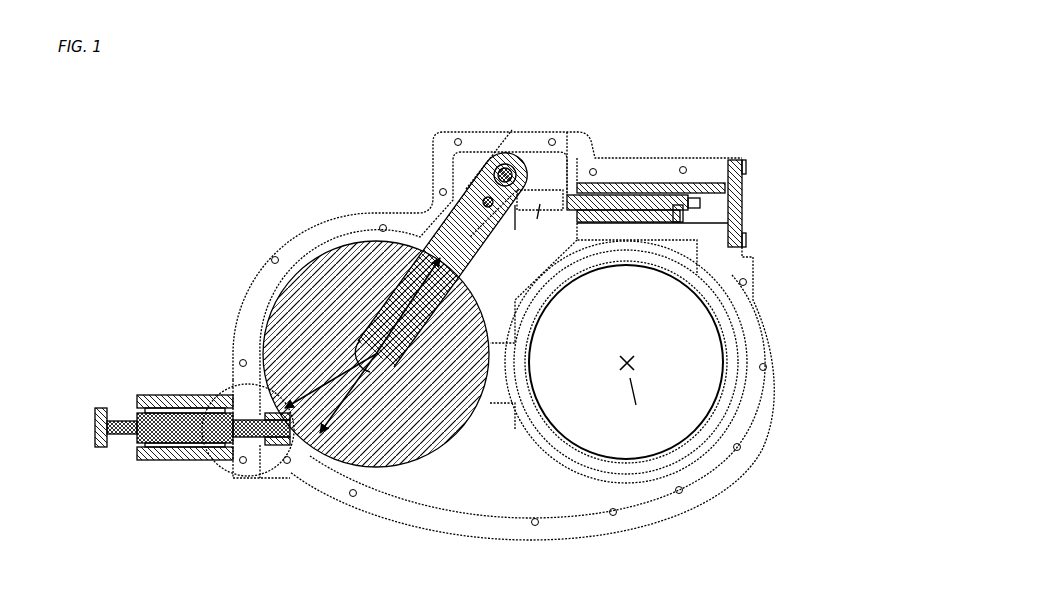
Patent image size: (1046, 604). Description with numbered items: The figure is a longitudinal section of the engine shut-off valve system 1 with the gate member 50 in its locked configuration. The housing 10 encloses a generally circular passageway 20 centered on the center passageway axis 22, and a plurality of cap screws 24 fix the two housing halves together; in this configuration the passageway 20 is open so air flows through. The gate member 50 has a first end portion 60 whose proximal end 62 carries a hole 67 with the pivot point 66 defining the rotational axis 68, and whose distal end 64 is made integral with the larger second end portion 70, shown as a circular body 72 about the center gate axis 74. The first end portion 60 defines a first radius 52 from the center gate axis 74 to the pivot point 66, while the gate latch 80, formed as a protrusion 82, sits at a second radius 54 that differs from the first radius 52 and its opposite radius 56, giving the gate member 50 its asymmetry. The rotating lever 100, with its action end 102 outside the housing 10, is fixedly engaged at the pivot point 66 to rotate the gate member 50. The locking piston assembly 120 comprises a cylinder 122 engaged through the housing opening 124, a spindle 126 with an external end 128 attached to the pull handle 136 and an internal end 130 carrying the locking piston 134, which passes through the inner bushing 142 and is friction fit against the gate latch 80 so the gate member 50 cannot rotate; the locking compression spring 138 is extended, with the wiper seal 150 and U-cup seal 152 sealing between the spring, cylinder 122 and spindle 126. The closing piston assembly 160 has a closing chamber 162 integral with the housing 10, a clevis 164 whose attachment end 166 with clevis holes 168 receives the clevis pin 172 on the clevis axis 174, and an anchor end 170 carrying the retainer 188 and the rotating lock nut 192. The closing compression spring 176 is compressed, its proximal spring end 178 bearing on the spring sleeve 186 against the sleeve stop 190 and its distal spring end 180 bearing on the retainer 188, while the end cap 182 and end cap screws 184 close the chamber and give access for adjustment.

The engine shut-off valve system 1 is at (197, 157).
The housing 10 is at (288, 235).
The passageway 20 is at (705, 388).
The center passageway axis 22 is at (626, 362).
The cap screws 24 is at (680, 490).
The gate member 50 is at (388, 450).
The first radius 52 is at (458, 380).
The second radius 54 is at (300, 462).
The opposite radius 56 is at (376, 356).
The first end portion 60 is at (465, 247).
The proximal end 62 is at (508, 172).
The distal end 64 is at (455, 262).
The pivot point 66 is at (510, 172).
The hole 67 is at (500, 172).
The rotational axis 68 is at (500, 172).
The second end portion 70 is at (452, 425).
The circular body 72 is at (430, 437).
The center gate axis 74 is at (376, 354).
The gate latch 80 is at (283, 406).
The protrusion 82 is at (290, 450).
The rotating lever 100 is at (505, 173).
The action end 102 is at (506, 170).
The locking piston assembly 120 is at (157, 397).
The cylinder 122 is at (207, 460).
The housing opening 124 is at (274, 447).
The spindle 126 is at (157, 440).
The external end 128 is at (138, 430).
The internal end 130 is at (233, 408).
The locking piston 134 is at (242, 413).
The pull handle 136 is at (100, 447).
The locking compression spring 138 is at (140, 415).
The inner bushing 142 is at (242, 447).
The wiper seal 150 is at (140, 418).
The U-cup seal 152 is at (187, 450).
The closing piston assembly 160 is at (660, 190).
The closing chamber 162 is at (720, 167).
The clevis 164 is at (533, 225).
The attachment end 166 is at (518, 238).
The clevis holes 168 is at (484, 200).
The anchor end 170 is at (645, 198).
The clevis pin 172 is at (486, 183).
The clevis axis 174 is at (483, 200).
The closing compression spring 176 is at (592, 188).
The proximal spring end 178 is at (604, 362).
The distal spring end 180 is at (664, 213).
The end cap 182 is at (740, 222).
The end cap screws 184 is at (740, 227).
The spring sleeve 186 is at (583, 185).
The retainer 188 is at (748, 155).
The sleeve stop 190 is at (584, 212).
The rotating lock nut 192 is at (672, 208).